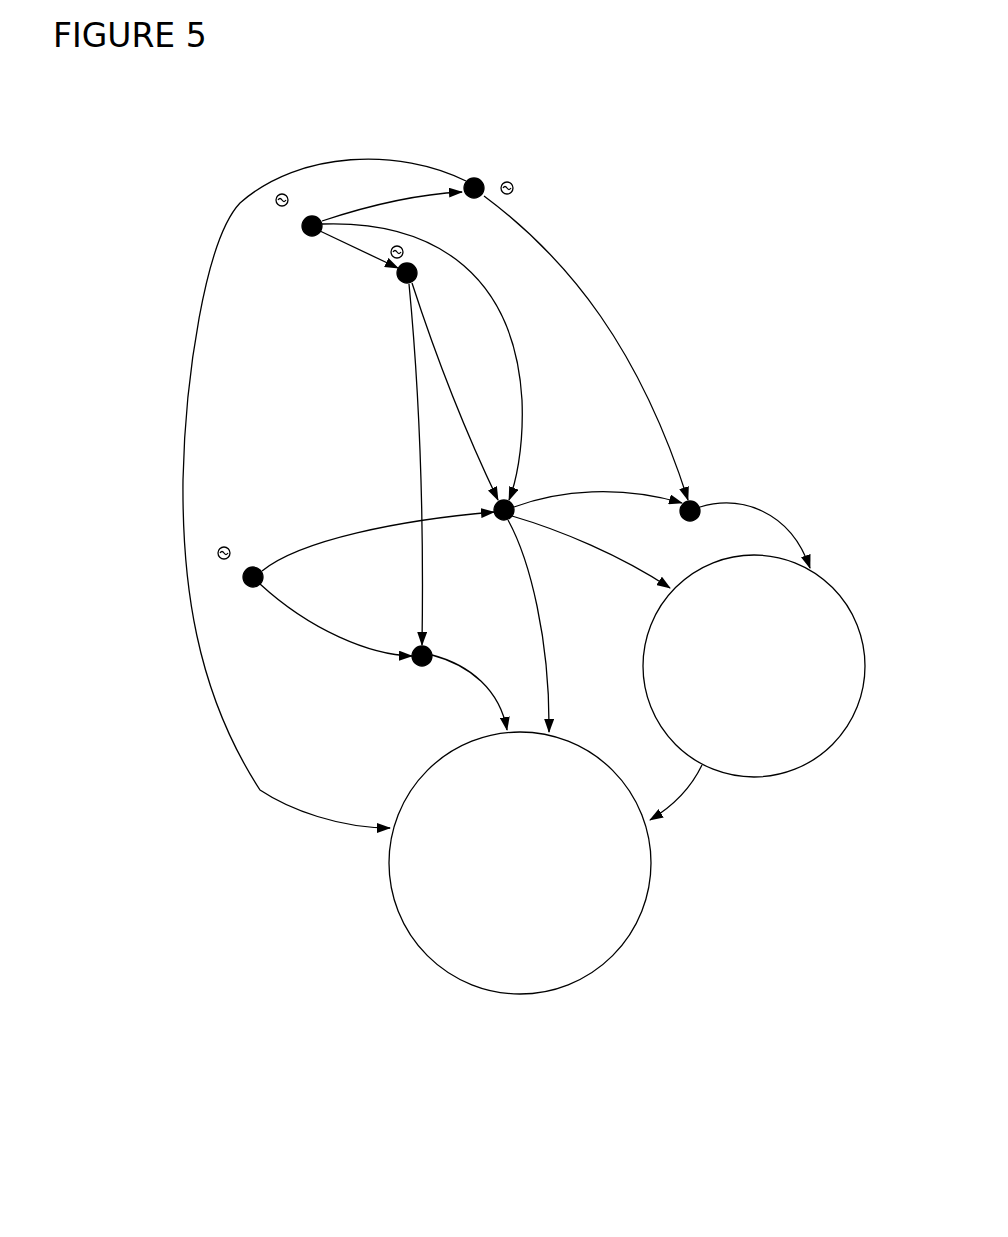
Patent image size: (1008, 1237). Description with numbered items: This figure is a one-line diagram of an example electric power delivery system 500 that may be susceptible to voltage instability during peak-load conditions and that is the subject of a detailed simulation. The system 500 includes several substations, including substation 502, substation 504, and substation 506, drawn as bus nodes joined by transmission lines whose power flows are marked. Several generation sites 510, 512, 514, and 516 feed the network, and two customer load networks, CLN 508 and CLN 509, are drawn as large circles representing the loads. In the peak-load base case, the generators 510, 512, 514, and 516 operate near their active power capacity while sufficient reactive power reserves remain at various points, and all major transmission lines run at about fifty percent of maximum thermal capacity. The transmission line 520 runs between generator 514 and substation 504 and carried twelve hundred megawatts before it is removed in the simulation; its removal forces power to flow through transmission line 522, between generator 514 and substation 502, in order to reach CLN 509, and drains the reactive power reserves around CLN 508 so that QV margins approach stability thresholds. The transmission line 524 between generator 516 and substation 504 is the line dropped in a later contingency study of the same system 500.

The electric power delivery system 500 is at (492, 584).
The substation 502 is at (420, 667).
The substation 504 is at (503, 520).
The substation 506 is at (692, 520).
The customer load network 508 is at (783, 777).
The customer load network 509 is at (522, 993).
The generation site 510 is at (477, 178).
The generation site 512 is at (307, 233).
The generation site 514 is at (404, 283).
The generation site 516 is at (247, 588).
The transmission line 520 is at (475, 443).
The transmission line 522 is at (415, 360).
The transmission line 524 is at (302, 542).